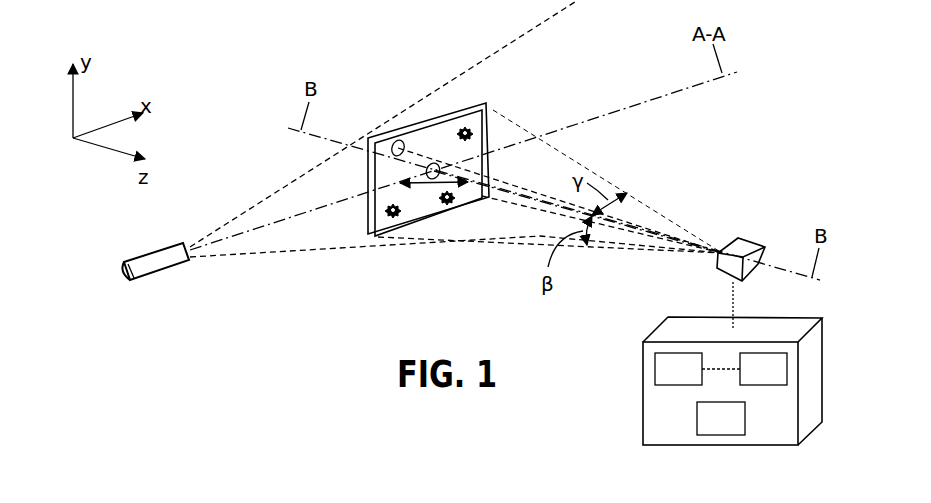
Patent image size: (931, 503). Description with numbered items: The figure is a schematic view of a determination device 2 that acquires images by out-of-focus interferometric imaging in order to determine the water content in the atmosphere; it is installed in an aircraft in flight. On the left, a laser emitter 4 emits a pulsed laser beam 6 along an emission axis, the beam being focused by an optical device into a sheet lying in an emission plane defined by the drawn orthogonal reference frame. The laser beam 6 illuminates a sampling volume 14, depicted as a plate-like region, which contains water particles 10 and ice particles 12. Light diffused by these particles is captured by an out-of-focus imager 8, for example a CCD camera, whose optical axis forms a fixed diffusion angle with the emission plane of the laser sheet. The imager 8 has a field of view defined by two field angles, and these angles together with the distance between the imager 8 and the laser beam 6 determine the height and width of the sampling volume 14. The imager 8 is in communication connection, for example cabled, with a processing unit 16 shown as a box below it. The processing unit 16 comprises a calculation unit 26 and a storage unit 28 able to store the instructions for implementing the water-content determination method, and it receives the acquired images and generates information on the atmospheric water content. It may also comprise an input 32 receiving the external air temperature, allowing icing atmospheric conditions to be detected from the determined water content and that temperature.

The determination device 2 is at (281, 297).
The laser emitter 4 is at (140, 268).
The pulsed laser beam 6 is at (268, 209).
The out-of-focus imager 8 is at (745, 247).
The water particles 10 is at (431, 164).
The ice particles 12 is at (469, 130).
The sampling volume 14 is at (465, 105).
The processing unit 16 is at (643, 377).
The calculation unit 26 is at (678, 369).
The storage unit 28 is at (763, 369).
The input 32 is at (721, 418).